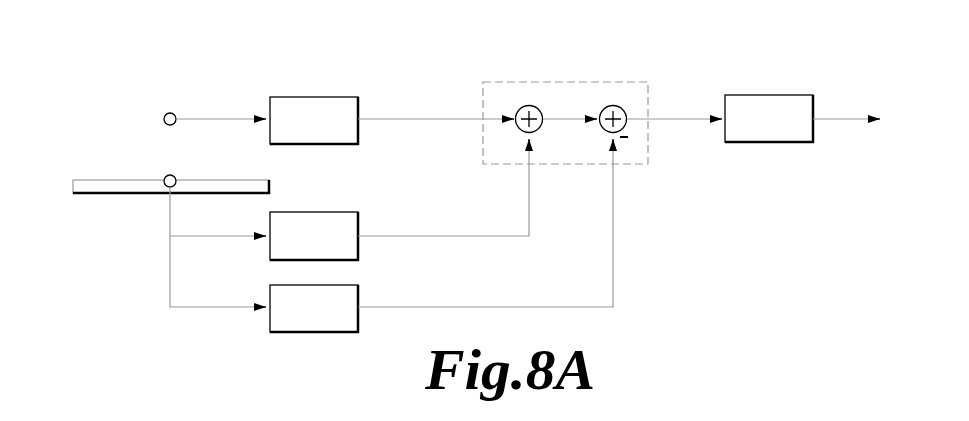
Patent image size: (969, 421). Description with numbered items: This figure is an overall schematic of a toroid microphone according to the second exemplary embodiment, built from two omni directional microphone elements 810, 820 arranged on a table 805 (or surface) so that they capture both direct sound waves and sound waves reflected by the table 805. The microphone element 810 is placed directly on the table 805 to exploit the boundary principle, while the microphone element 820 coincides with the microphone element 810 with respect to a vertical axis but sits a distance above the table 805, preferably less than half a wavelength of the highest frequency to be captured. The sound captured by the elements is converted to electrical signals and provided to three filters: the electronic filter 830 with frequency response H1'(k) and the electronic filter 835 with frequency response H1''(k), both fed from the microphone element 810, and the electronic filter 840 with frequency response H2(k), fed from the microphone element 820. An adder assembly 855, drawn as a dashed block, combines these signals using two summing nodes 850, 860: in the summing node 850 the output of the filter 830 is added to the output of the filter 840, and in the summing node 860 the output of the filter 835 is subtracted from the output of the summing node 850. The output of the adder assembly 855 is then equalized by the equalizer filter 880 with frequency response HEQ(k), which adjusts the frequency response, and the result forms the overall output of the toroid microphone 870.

The table 805 is at (101, 178).
The omni directional microphone element 810 is at (176, 177).
The omni directional microphone element 820 is at (172, 112).
The electronic filter 830 is at (345, 212).
The electronic filter 835 is at (359, 293).
The electronic filter 840 is at (322, 97).
The summing node 850 is at (529, 105).
The adder assembly 855 is at (648, 164).
The summing node 860 is at (613, 105).
The output of the toroid microphone 870 is at (842, 117).
The equalizer filter 880 is at (765, 95).